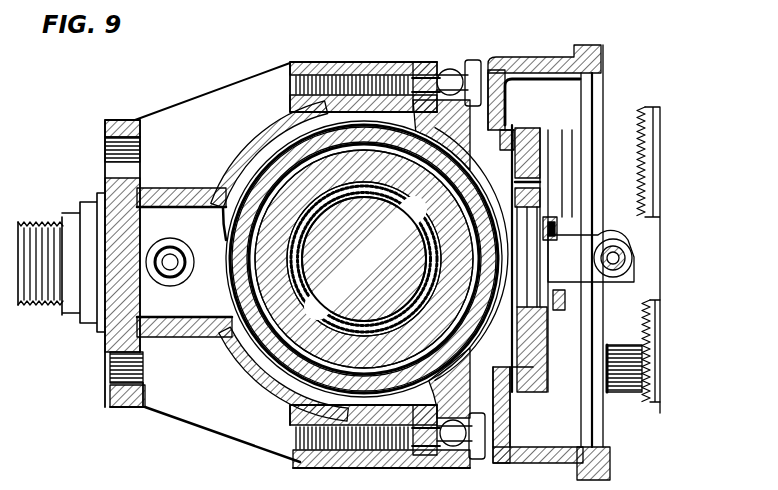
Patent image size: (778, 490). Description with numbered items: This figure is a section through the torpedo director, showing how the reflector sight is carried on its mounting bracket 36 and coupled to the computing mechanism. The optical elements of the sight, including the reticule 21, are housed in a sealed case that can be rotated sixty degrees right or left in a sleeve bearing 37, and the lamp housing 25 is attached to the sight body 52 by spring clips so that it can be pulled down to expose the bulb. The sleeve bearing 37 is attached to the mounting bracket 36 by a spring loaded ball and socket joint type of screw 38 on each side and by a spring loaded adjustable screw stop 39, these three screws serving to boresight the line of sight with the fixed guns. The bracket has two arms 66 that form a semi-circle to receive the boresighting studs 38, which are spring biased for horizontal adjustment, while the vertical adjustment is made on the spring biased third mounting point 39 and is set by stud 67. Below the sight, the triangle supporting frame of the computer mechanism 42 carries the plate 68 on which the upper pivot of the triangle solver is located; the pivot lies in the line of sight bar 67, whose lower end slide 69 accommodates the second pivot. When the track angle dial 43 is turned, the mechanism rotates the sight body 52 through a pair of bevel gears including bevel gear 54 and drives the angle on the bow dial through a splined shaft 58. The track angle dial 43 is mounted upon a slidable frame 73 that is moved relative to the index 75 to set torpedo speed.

The reticule 21 is at (372, 296).
The lamp housing 25 is at (74, 312).
The mounting bracket 36 is at (117, 347).
The sleeve bearing 37 is at (273, 163).
The ball and socket joint type of screw 38 is at (450, 70).
The adjustable screw stop 39 is at (172, 238).
The frame of the computer mechanism 42 is at (556, 366).
The track angle dial 43 is at (655, 142).
The sight body 52 is at (303, 173).
The bevel gear 54 is at (657, 400).
The splined shaft 58 is at (628, 266).
The arms 66 is at (357, 70).
The line of sight bar 67 is at (562, 298).
The plate 68 is at (542, 193).
The slide 69 is at (553, 213).
The slidable frame 73 is at (593, 88).
The index 75 is at (610, 467).